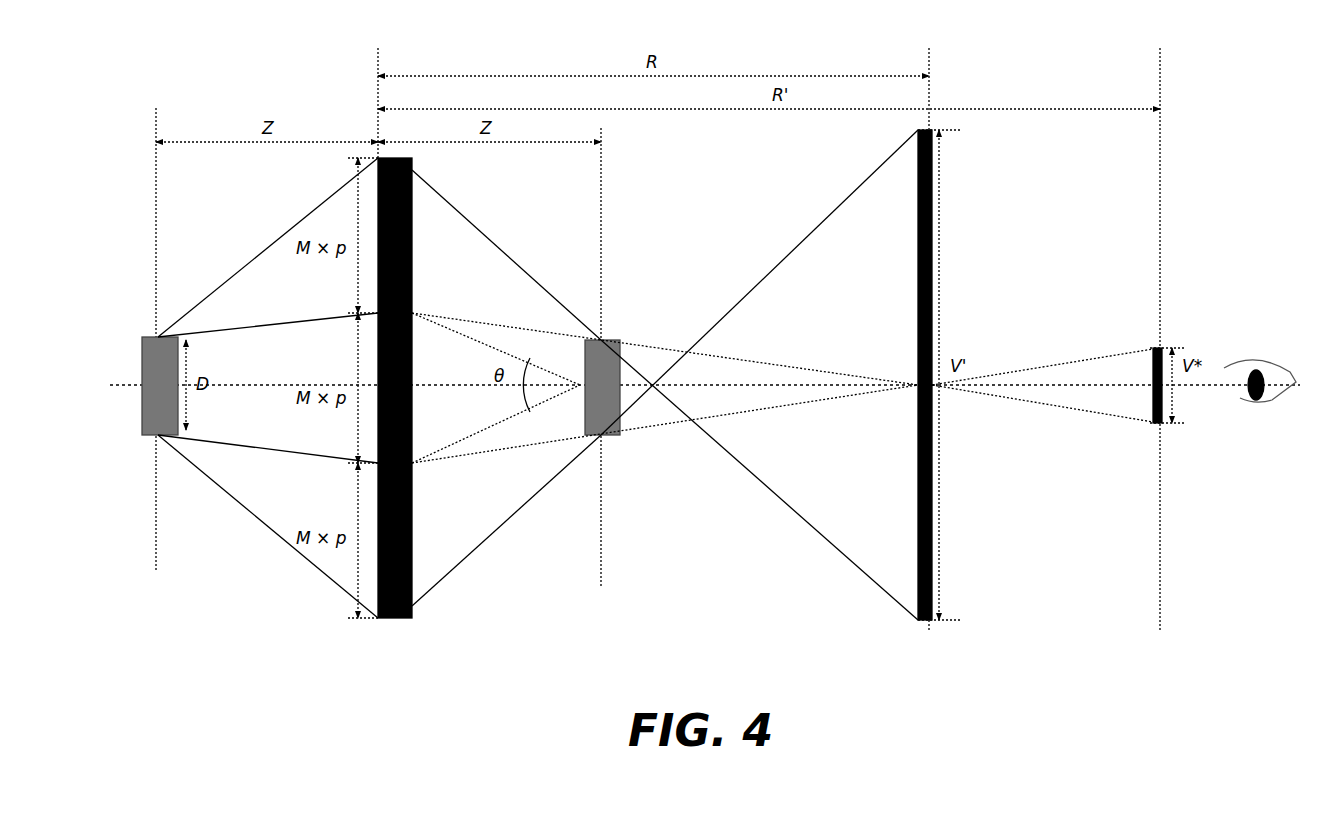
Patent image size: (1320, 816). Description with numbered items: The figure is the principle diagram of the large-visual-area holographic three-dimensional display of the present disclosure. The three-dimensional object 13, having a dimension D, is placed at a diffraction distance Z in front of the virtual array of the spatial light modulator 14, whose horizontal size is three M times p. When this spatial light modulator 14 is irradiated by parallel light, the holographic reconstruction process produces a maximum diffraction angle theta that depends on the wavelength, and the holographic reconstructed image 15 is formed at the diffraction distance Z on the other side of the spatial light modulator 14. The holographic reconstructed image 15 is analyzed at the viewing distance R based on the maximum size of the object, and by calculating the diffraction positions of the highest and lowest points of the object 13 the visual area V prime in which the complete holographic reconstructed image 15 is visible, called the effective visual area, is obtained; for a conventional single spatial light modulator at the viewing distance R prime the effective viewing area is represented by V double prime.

The 3D object 13 is at (158, 337).
The 3M×N spatial light modulator 14 is at (412, 242).
The holographic reconstructed image 15 is at (606, 341).